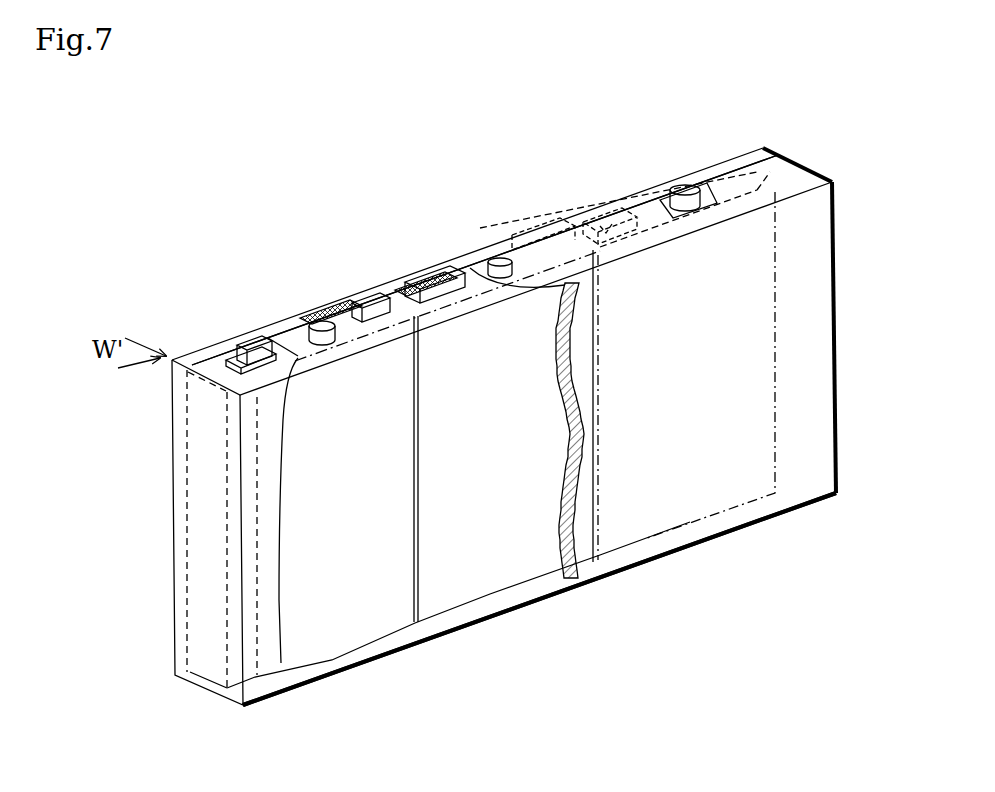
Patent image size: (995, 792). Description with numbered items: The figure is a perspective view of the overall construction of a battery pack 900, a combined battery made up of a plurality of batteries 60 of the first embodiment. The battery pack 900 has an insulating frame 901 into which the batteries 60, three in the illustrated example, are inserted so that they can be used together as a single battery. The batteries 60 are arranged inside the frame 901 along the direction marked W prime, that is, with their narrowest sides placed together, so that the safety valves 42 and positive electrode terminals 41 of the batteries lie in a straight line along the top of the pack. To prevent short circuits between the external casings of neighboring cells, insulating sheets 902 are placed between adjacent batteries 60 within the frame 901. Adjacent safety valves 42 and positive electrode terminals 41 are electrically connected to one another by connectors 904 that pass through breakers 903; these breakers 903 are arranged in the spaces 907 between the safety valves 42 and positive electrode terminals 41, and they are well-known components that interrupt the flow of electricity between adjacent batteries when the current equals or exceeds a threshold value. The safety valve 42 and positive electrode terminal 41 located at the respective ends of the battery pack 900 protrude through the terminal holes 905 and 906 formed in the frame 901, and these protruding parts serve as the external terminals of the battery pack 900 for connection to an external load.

The battery pack 900 is at (905, 110).
The insulating frame 901 is at (836, 304).
The insulating sheet 902 is at (416, 632).
The breaker 903 is at (368, 286).
The connector 904 is at (423, 277).
The terminal hole 905 is at (223, 347).
The terminal hole 906 is at (657, 203).
The space 907 is at (348, 330).
The positive electrode terminal 41 is at (690, 182).
The safety valve 42 is at (243, 336).
The battery 60 is at (333, 660).